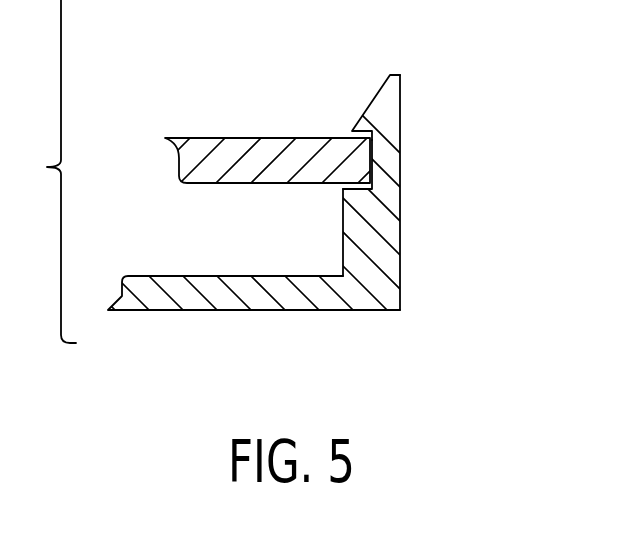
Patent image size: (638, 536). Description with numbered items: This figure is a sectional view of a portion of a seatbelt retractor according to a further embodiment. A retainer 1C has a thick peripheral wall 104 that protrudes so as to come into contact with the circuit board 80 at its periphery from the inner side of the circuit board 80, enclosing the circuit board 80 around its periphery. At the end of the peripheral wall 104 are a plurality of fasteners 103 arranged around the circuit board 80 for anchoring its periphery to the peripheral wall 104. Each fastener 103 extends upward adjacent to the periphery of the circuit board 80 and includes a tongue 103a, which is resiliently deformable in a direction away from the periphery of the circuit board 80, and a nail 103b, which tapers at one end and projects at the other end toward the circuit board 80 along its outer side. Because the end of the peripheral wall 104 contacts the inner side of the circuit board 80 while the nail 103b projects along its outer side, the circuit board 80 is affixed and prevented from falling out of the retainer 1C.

The fastener 103 is at (410, 102).
The tongue 103a is at (398, 158).
The nail 103b is at (375, 108).
The peripheral wall 104 is at (393, 240).
The retainer 1C is at (220, 303).
The circuit board 80 is at (213, 147).